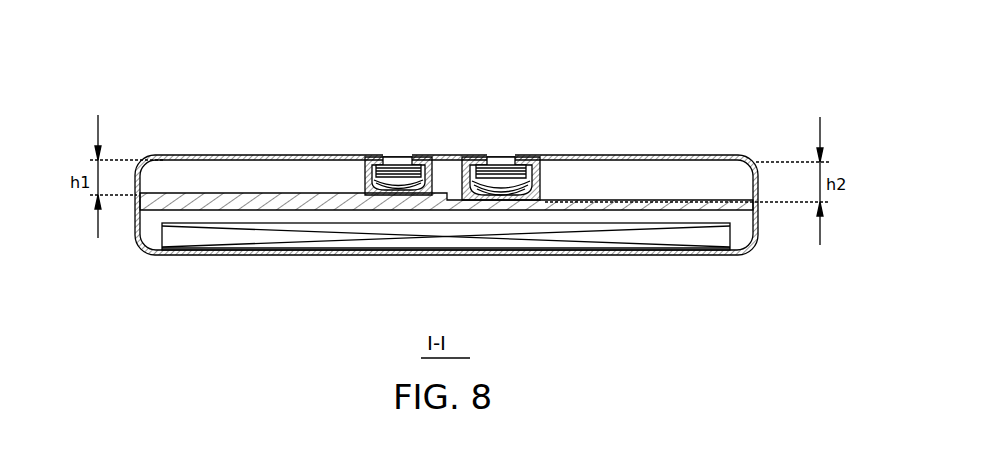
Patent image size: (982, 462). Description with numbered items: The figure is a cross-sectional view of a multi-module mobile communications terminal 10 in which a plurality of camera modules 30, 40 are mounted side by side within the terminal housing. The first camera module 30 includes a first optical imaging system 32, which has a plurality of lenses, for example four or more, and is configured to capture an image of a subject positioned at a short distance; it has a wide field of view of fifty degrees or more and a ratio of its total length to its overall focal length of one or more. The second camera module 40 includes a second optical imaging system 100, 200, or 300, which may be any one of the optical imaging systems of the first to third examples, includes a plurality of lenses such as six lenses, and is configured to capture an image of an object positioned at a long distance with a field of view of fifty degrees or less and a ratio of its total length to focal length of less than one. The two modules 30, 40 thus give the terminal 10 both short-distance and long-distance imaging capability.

The multi-module mobile communications terminal 10 is at (693, 152).
The first camera module 30 is at (398, 188).
The first optical imaging system 32 is at (397, 145).
The second camera module 40 is at (495, 173).
The second optical imaging system 100 is at (490, 113).
The second optical imaging system 200 is at (490, 113).
The second optical imaging system 300 is at (490, 113).